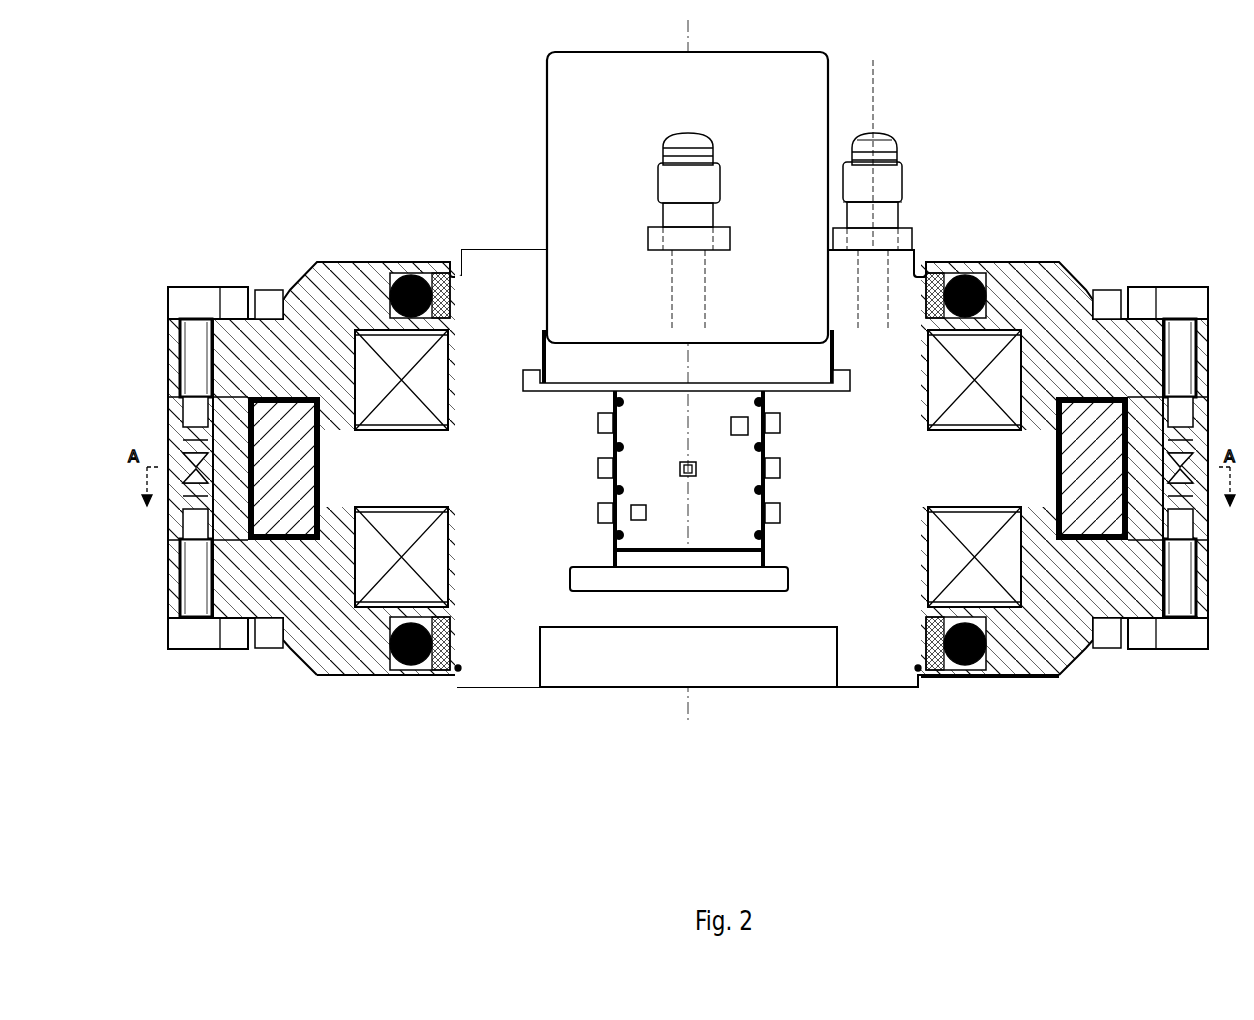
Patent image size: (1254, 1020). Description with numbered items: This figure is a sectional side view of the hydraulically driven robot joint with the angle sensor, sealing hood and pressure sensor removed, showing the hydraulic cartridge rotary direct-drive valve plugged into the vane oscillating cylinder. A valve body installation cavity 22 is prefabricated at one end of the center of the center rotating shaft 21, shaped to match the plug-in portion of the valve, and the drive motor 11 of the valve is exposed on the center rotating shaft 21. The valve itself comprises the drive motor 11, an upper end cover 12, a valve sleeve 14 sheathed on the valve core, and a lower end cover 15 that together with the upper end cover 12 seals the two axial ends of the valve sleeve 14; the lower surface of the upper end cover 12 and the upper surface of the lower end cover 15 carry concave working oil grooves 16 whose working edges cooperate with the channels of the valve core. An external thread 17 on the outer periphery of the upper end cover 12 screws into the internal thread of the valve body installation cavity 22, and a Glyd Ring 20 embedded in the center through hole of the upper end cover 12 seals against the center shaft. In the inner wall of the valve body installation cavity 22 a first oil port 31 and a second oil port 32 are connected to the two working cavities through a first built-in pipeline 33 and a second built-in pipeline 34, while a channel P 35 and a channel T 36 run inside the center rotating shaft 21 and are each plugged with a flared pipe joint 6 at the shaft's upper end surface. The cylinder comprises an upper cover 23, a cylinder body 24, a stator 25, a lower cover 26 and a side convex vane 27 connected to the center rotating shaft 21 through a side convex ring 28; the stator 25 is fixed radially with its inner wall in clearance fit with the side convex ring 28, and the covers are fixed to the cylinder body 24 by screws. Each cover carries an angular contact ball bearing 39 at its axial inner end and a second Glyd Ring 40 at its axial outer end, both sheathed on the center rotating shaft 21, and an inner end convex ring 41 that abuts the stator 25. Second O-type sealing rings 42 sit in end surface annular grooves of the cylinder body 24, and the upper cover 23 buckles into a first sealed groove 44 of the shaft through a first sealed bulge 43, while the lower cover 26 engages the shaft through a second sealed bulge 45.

The flared pipe joint 6 is at (706, 182).
The drive motor 11 is at (765, 110).
The upper end cover 12 is at (622, 372).
The valve sleeve 14 is at (655, 465).
The lower end cover 15 is at (643, 563).
The concave working oil groove 16 is at (930, 677).
The external thread 17 is at (513, 417).
The Glyd Ring 20 is at (187, 340).
The center rotating shaft 21 is at (395, 268).
The valve body installation cavity 22 is at (612, 595).
The upper cover 23 is at (327, 317).
The cylinder body 24 is at (250, 540).
The stator 25 is at (262, 392).
The lower cover 26 is at (322, 535).
The side convex vane 27 is at (1140, 630).
The side convex ring 28 is at (458, 630).
The first oil port 31 is at (925, 262).
The second oil port 32 is at (736, 437).
The first built-in pipeline 33 is at (770, 500).
The second built-in pipeline 34 is at (797, 560).
The channel P 35 is at (893, 145).
The channel T 36 is at (880, 318).
The angular contact ball bearing 39 is at (1095, 595).
The second Glyd Ring 40 is at (1045, 565).
The inner end convex ring 41 is at (1000, 372).
The second O-type sealing ring 42 is at (1138, 288).
The first sealed bulge 43 is at (840, 385).
The first sealed groove 44 is at (925, 333).
The second sealed bulge 45 is at (912, 665).